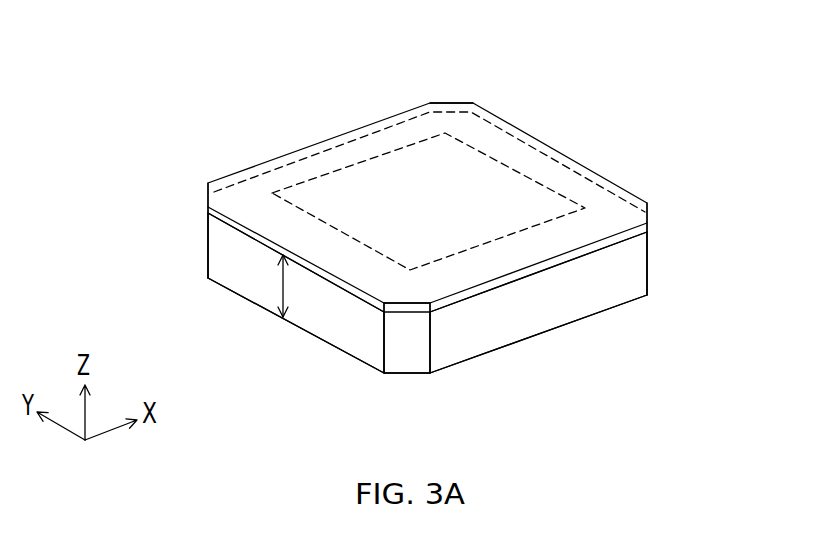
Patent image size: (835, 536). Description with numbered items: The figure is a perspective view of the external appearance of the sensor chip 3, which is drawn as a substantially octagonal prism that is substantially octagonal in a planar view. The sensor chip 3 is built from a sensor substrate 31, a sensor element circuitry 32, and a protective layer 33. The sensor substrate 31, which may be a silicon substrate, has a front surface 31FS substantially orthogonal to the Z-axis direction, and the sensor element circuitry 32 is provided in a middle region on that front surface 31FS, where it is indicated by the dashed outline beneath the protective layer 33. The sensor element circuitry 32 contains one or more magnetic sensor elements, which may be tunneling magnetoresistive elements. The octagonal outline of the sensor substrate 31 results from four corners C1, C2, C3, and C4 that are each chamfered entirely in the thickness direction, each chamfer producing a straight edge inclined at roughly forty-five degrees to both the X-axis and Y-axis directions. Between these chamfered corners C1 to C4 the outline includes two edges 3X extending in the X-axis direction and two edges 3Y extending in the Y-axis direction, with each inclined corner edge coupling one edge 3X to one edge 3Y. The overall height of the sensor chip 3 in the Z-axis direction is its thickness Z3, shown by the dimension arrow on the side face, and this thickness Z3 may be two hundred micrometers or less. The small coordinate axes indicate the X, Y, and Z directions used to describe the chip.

The sensor chip 3 is at (451, 233).
The sensor substrate 31 is at (542, 297).
The front surface 31FS is at (595, 170).
The sensor element circuitry 32 is at (345, 160).
The protective layer 33 is at (592, 245).
The corner C1 is at (656, 216).
The corner C2 is at (407, 352).
The corner C3 is at (202, 200).
The corner C4 is at (448, 98).
The edge 3X is at (448, 340).
The edge 3Y is at (360, 322).
The thickness Z3 is at (296, 286).